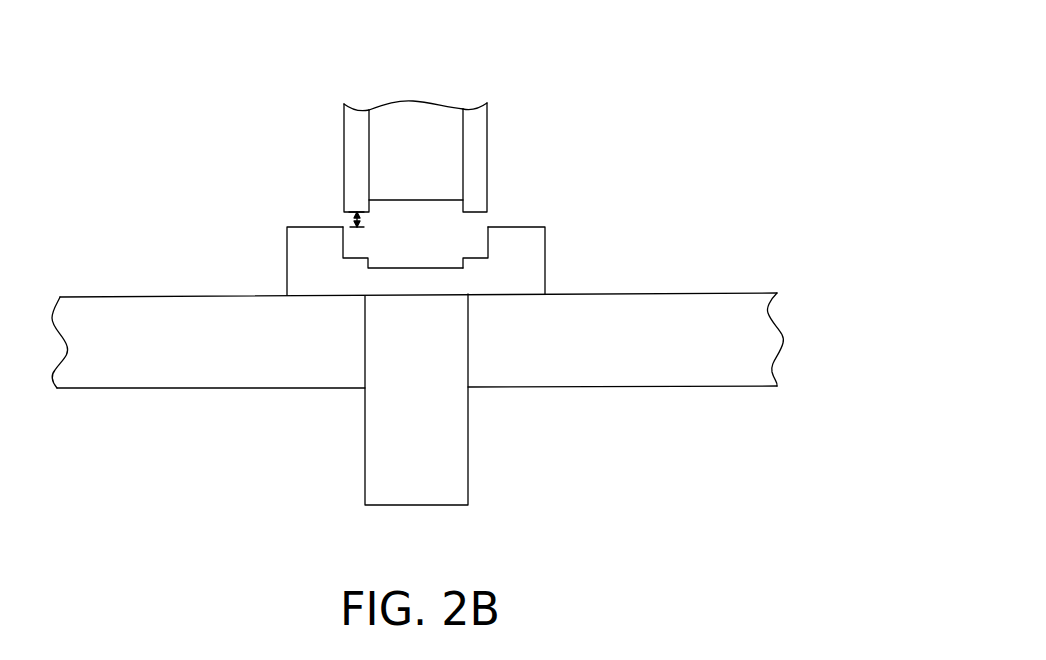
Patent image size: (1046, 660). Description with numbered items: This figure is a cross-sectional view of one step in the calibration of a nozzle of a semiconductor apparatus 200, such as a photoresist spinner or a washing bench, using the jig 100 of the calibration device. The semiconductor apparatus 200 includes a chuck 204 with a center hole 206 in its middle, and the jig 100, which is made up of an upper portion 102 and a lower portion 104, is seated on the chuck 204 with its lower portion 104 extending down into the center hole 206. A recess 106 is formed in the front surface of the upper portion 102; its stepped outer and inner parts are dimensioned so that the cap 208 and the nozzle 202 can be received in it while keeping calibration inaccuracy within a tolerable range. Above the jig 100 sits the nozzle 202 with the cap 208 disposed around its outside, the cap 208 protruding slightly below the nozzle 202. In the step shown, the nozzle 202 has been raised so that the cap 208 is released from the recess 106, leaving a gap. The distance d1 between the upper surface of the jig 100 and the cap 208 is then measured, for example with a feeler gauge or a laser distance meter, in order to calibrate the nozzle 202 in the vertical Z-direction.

The semiconductor apparatus 200 is at (737, 568).
The nozzle 202 is at (440, 157).
The chuck 204 is at (720, 310).
The center hole 206 is at (468, 363).
The cap 208 is at (472, 112).
The jig 100 is at (488, 245).
The upper portion 102 is at (522, 255).
The lower portion 104 is at (443, 332).
The recess 106 is at (490, 242).
The distance d1 is at (355, 213).